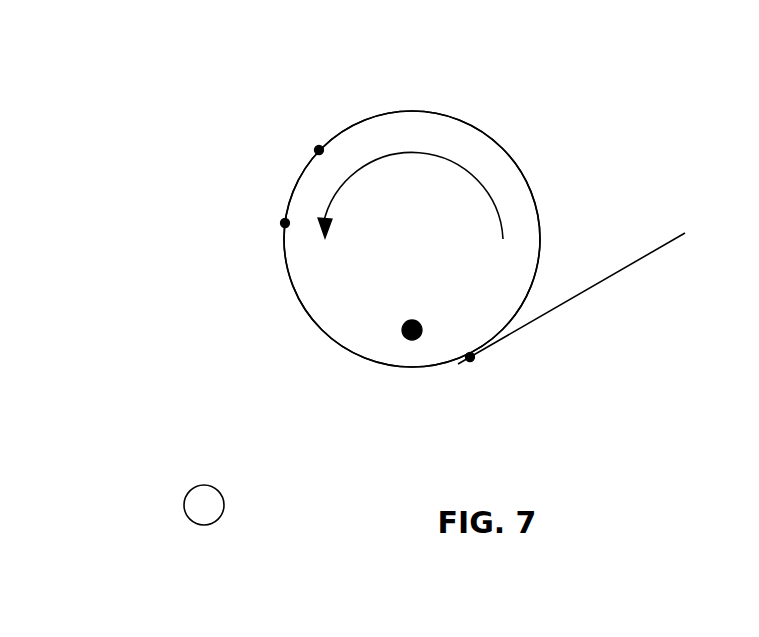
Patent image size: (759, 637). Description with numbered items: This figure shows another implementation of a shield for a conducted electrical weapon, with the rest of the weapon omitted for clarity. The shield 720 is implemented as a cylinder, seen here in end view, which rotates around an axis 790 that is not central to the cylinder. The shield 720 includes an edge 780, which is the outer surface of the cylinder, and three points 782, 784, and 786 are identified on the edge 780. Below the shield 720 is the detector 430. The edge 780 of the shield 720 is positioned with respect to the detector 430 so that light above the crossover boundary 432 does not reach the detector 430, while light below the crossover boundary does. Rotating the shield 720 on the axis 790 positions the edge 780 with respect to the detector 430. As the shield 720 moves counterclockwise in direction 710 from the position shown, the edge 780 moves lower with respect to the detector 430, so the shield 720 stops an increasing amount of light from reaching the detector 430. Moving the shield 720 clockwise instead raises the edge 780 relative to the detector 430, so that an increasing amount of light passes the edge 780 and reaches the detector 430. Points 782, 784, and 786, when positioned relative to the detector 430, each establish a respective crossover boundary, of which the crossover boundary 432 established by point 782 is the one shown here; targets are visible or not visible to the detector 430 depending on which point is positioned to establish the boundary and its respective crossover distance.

The shield 720 is at (410, 110).
The edge 780 is at (335, 342).
The direction 710 is at (455, 158).
The point 786 is at (318, 150).
The point 784 is at (285, 223).
The point 782 is at (470, 357).
The axis 790 is at (412, 330).
The crossover boundary 432 is at (602, 280).
The detector 430 is at (184, 500).